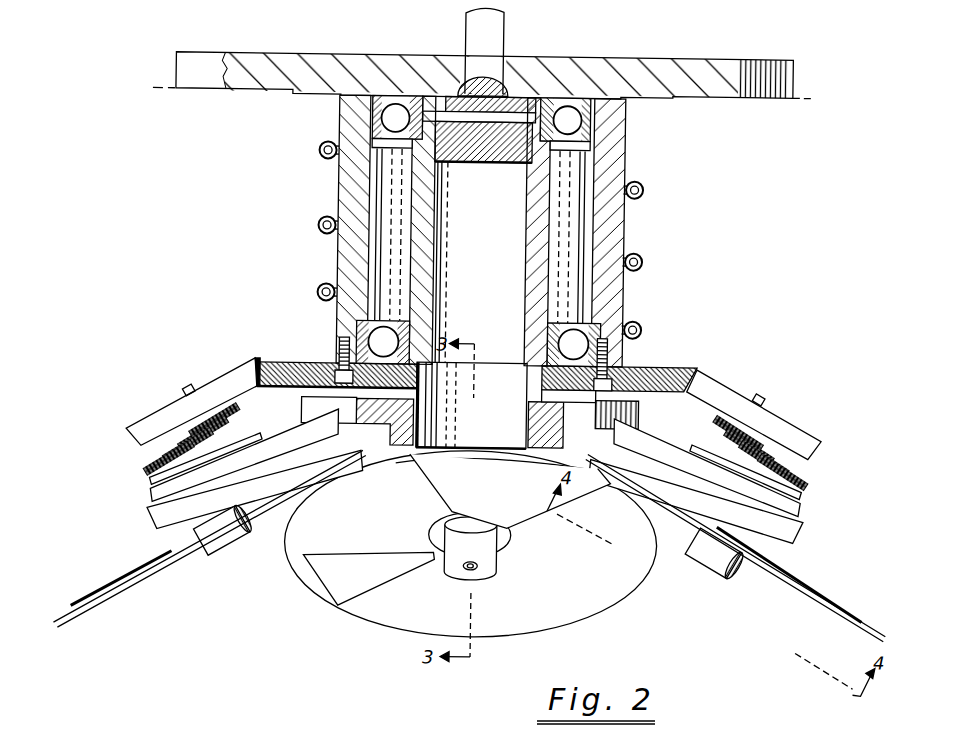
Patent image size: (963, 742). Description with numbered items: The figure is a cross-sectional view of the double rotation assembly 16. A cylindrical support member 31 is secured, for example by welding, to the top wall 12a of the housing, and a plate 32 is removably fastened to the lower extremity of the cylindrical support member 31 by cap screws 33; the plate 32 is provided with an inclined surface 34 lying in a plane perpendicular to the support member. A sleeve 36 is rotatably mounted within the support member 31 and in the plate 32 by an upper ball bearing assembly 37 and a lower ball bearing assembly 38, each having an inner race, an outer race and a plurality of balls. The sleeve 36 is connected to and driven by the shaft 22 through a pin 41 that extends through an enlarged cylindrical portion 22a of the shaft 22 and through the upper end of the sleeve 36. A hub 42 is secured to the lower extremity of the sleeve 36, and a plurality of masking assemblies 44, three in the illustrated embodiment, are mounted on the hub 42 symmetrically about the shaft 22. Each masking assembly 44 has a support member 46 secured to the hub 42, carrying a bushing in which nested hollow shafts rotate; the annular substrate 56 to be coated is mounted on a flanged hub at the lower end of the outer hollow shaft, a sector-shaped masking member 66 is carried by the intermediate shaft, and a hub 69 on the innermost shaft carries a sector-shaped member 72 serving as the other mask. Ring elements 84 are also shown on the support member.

The top wall 12a is at (620, 70).
The double rotation assembly 16 is at (237, 294).
The shaft 22 is at (495, 46).
The enlarged cylindrical portion 22a is at (485, 162).
The cylindrical support member 31 is at (617, 160).
The plate 32 is at (660, 365).
The cap screws 33 is at (340, 346).
The inclined surface 34 is at (702, 368).
The sleeve 36 is at (540, 252).
The upper ball bearing assembly 37 is at (592, 131).
The lower ball bearing assembly 38 is at (567, 332).
The pin 41 is at (445, 115).
The hub 42 is at (395, 432).
The masking assemblies 44 is at (130, 472).
The support member 46 is at (157, 516).
The annular substrate 56 is at (110, 603).
The sector-shaped masking member 66 is at (310, 559).
The hub 69 is at (215, 560).
The sector-shaped member 72 is at (590, 608).
The ring 84 is at (642, 256).